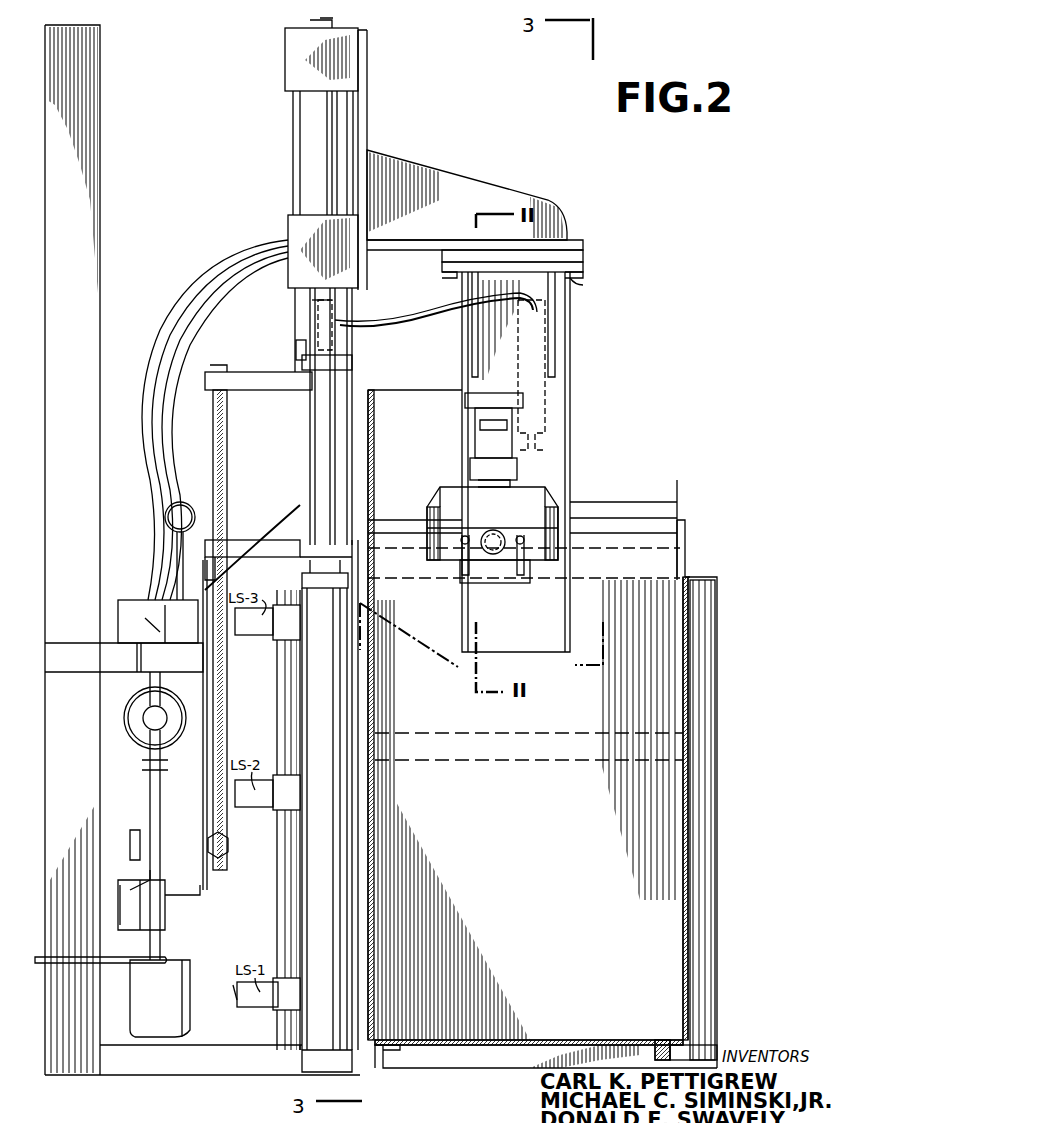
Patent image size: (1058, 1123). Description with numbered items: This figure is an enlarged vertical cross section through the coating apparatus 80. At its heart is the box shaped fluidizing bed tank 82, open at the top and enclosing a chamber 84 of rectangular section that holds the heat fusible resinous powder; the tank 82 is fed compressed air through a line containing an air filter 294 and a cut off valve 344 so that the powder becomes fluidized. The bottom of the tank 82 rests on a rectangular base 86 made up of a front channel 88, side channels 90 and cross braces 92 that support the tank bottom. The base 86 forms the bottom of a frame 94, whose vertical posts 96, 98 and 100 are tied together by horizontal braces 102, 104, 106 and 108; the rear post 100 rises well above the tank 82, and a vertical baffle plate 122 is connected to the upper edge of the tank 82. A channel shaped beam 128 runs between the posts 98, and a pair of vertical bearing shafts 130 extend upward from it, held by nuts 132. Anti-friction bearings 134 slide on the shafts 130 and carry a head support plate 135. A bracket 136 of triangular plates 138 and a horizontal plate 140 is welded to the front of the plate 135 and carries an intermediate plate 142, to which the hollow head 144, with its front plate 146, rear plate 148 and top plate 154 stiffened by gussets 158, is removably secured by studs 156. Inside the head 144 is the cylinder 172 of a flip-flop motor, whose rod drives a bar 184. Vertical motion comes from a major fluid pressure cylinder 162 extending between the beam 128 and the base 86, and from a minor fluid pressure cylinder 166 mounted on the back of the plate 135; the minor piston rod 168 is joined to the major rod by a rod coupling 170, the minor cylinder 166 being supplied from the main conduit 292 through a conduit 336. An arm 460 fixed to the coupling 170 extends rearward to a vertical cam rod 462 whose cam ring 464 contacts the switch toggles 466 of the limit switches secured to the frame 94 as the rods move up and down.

The coating apparatus 80 is at (435, 128).
The fluidizing bed tank 82 is at (683, 531).
The chamber 84 is at (680, 626).
The base 86 is at (522, 1070).
The front channel 88 is at (717, 1050).
The side channels 90 is at (603, 1048).
The cross braces 92 is at (395, 1052).
The frame 94 is at (717, 688).
The vertically extending post 96 is at (705, 795).
The vertically extending post 98 is at (345, 320).
The rear post 100 is at (108, 258).
The horizontal brace 102 is at (530, 733).
The horizontal brace 104 is at (690, 566).
The horizontal brace 106 is at (578, 556).
The horizontal brace 108 is at (110, 690).
The vertical baffle plate 122 is at (373, 390).
The channel shaped beam 128 is at (300, 530).
The bearing shafts 130 is at (327, 172).
The nuts 132 is at (300, 568).
The anti-friction bearings 134 is at (288, 60).
The head support plate 135 is at (367, 110).
The bracket 136 is at (462, 172).
The triangular plates 138 is at (500, 195).
The horizontal plate 140 is at (568, 246).
The intermediate plate 142 is at (583, 255).
The head 144 is at (571, 346).
The front plate 146 is at (571, 370).
The rear plate 148 is at (462, 333).
The top plate 154 is at (583, 268).
The studs 156 is at (577, 280).
The gussets 158 is at (466, 360).
The major fluid pressure cylinder 162 is at (350, 812).
The minor fluid pressure cylinder 166 is at (293, 148).
The piston rod 168 is at (312, 298).
The rod coupling 170 is at (296, 348).
The cylinder 172 is at (572, 377).
The bar 184 is at (545, 462).
The main conduit 292 is at (58, 957).
The air filter 294 is at (193, 978).
The conduit 336 is at (430, 316).
The cut off valve 344 is at (128, 912).
The arm 460 is at (268, 358).
The cam rod 462 is at (227, 430).
The cam ring 464 is at (226, 845).
The switch toggles 466 is at (237, 992).